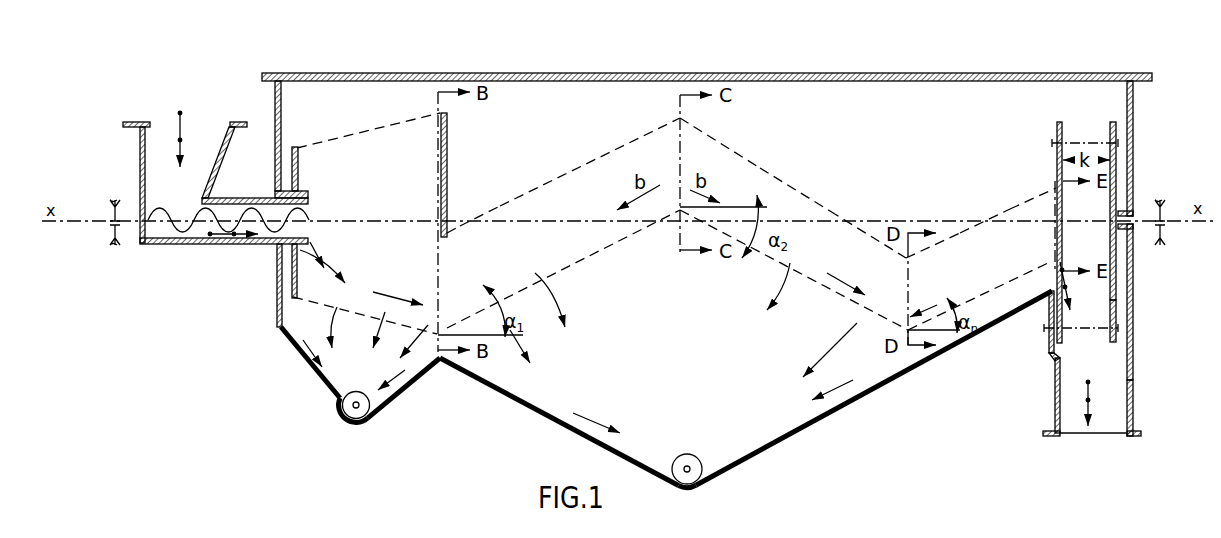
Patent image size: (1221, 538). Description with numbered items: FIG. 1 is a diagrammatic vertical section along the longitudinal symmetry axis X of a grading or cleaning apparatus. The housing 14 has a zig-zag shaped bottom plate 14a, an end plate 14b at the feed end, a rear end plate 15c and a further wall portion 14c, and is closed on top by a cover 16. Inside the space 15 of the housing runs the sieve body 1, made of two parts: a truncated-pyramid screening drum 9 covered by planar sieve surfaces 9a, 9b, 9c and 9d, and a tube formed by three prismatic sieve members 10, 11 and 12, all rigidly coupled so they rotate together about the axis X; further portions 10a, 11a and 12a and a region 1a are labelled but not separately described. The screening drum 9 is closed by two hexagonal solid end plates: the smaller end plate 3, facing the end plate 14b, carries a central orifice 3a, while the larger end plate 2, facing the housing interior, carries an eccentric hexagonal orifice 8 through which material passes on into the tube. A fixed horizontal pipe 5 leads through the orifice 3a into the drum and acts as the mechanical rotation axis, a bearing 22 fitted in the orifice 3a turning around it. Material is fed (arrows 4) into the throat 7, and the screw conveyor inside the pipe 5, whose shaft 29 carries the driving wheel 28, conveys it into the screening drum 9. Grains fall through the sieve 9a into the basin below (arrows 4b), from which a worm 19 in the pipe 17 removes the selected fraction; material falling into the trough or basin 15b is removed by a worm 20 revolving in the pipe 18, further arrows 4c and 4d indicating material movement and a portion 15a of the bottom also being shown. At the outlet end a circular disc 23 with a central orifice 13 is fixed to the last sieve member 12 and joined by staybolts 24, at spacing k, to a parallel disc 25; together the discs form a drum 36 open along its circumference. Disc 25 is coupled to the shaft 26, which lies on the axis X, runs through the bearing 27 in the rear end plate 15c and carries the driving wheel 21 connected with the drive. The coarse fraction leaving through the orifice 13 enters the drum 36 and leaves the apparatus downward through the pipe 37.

The sieve body 1 is at (707, 193).
The chamber 1a is at (422, 118).
The larger end plate 2 is at (450, 142).
The smaller end plate 3 is at (292, 166).
The central orifice 3a is at (306, 193).
The material feed arrows 4 is at (182, 113).
The falling grain arrows 4b is at (402, 377).
The material flow on second chute 4c is at (575, 413).
The material discharge flow 4d is at (1057, 395).
The horizontal pipe 5 is at (168, 247).
The throat 7 is at (150, 130).
The hexagonal orifice 8 is at (463, 237).
The screening drum 9 is at (628, 146).
The sieve surface 9a is at (328, 137).
The sieve surface 9b is at (548, 186).
The sieve surface 9c is at (695, 128).
The sieve surface 9d is at (938, 235).
The prismatic sieve member 10 is at (563, 217).
The lower deflector section 10a is at (492, 210).
The prismatic sieve member 11 is at (794, 236).
The deflector section 11a is at (815, 202).
The prismatic sieve member 12 is at (979, 241).
The deflector section 12a is at (972, 235).
The outlet orifice 13 is at (1057, 190).
The housing 14 is at (270, 240).
The bottom plate 14a is at (308, 378).
The end plate 14b is at (277, 322).
The housing wall 14c is at (276, 112).
The housing space 15 is at (781, 355).
The rising chute section 15a is at (430, 400).
The trough or basin 15b is at (763, 427).
The rear end plate 15c is at (1132, 302).
The cover 16 is at (308, 74).
The pipe 17 is at (325, 397).
The pipe 18 is at (706, 461).
The worm 19 is at (356, 404).
The worm 20 is at (688, 468).
The driving wheel 21 is at (1166, 235).
The bearing 22 is at (280, 253).
The circular disc 23 is at (1059, 125).
The staybolts 24 is at (1116, 140).
The circular disc 25 is at (1115, 342).
The shaft 26 is at (1135, 213).
The bearing 27 is at (1131, 228).
The driving wheel 28 is at (110, 232).
The shaft 29 is at (98, 215).
The drum 36 is at (1053, 160).
The discharge pipe 37 is at (1131, 402).